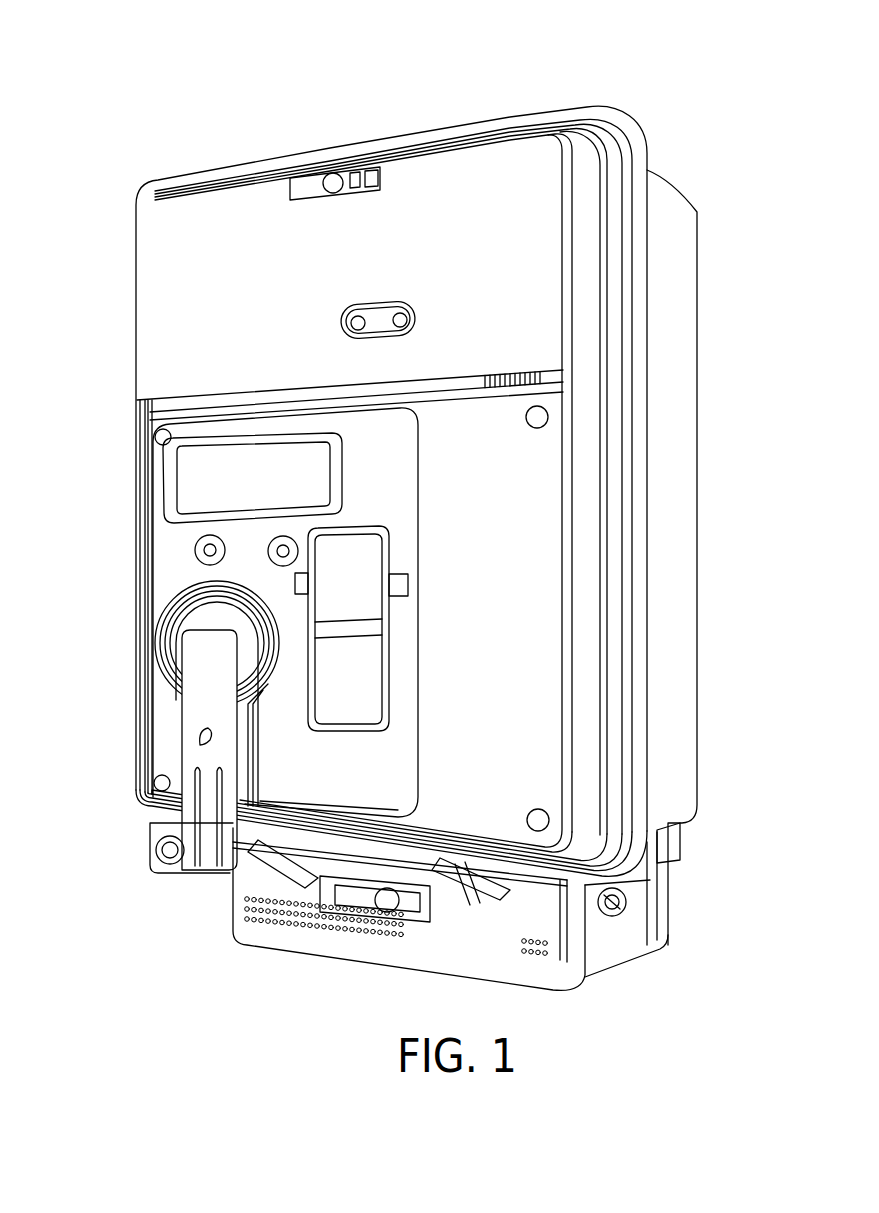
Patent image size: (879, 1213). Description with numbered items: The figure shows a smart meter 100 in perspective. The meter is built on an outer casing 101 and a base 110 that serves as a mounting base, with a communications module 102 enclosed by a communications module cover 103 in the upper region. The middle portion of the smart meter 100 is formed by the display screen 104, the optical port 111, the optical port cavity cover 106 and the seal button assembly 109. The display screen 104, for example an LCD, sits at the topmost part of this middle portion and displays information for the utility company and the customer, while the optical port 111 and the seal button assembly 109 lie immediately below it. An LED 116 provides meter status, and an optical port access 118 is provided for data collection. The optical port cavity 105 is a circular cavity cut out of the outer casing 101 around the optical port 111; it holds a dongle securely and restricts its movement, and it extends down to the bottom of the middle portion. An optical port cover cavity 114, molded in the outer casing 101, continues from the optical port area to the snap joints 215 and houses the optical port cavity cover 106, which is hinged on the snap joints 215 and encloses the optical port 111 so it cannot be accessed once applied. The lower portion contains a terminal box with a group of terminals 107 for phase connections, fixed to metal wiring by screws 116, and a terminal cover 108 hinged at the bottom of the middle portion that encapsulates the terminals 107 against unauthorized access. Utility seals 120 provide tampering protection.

The smart meter 100 is at (150, 52).
The outer casing 101 is at (138, 426).
The communications module 102 is at (147, 193).
The communications module cover 103 is at (173, 237).
The display screen 104 is at (200, 476).
The optical port cavity 105 is at (197, 612).
The optical port cavity cover 106 is at (210, 803).
The terminals 107 is at (632, 845).
The terminal cover 108 is at (604, 970).
The seal button assembly 109 is at (358, 576).
The base 110 is at (688, 222).
The optical port 111 is at (155, 770).
The optical port cover cavity 114 is at (245, 762).
The LED 116 is at (196, 549).
The optical port access 118 is at (160, 668).
The utility seals 120 is at (155, 880).
The snap joints 215 is at (157, 826).